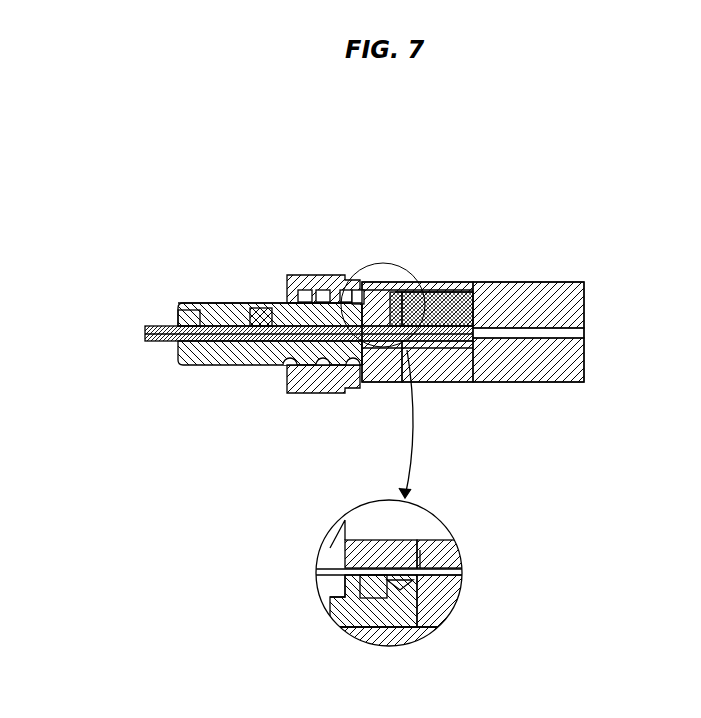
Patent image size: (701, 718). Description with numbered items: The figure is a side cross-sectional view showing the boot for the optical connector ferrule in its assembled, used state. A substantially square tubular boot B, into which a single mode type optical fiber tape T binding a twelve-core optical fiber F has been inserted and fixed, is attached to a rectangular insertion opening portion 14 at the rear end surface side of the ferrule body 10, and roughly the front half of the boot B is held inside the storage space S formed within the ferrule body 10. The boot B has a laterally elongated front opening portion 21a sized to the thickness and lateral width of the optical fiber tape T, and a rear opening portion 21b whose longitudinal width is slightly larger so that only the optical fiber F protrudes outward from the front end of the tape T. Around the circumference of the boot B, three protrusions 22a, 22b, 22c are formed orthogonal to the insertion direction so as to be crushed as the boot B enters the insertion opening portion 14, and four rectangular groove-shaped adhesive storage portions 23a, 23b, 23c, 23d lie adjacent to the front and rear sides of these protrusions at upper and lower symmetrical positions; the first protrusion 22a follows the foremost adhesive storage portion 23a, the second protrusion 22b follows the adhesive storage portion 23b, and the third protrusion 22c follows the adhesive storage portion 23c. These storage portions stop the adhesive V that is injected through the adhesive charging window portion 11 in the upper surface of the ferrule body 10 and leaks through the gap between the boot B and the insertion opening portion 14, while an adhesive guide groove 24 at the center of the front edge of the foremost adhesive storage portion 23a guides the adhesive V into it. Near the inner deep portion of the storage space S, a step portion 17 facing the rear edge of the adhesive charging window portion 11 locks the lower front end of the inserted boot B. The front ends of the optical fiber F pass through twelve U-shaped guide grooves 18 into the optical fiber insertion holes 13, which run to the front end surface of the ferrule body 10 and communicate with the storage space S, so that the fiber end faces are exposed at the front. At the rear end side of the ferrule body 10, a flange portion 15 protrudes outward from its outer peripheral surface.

The ferrule body 10 is at (543, 270).
The adhesive charging window portion 11 is at (473, 282).
The optical fiber insertion holes 13 is at (585, 282).
The insertion opening portion 14 is at (205, 303).
The flange portion 15 is at (270, 290).
The step portion 17 is at (378, 382).
The U-shaped guide grooves 18 is at (434, 347).
The front opening portion 21a is at (422, 627).
The rear opening portion 21b is at (178, 320).
The first protrusion 22a is at (395, 292).
The second protrusion 22b is at (346, 290).
The third protrusion 22c is at (305, 290).
The adhesive storage portion 23a is at (412, 292).
The adhesive storage portion 23b is at (358, 290).
The adhesive storage portion 23c is at (322, 290).
The adhesive storage portion 23d is at (250, 303).
The adhesive guide groove 24 is at (413, 578).
The boot B is at (198, 303).
The twelve-core optical fiber F is at (585, 330).
The storage space S is at (330, 378).
The single mode type optical fiber tape T is at (163, 342).
The adhesive V is at (440, 283).